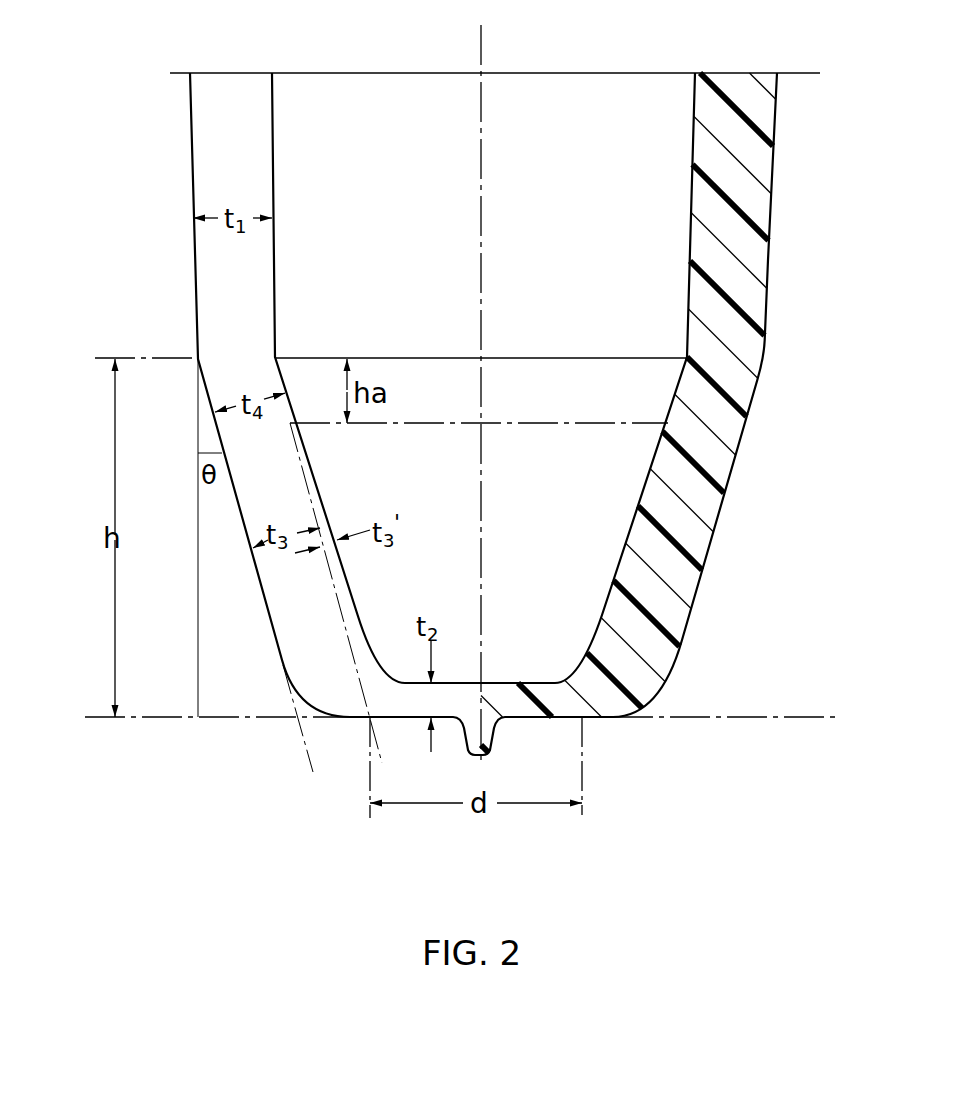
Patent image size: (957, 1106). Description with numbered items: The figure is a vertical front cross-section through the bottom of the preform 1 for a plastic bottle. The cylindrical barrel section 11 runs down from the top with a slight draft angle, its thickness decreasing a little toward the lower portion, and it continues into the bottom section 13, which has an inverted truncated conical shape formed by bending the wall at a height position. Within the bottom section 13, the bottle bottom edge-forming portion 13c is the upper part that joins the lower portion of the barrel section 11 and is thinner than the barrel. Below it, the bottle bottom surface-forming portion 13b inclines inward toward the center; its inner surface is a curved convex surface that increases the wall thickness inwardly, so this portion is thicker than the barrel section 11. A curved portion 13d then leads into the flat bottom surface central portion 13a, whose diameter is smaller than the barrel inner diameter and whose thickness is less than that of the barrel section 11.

The preform 1 is at (186, 188).
The barrel section 11 is at (743, 162).
The bottom section 13 is at (728, 478).
The bottom surface central portion 13a is at (524, 682).
The bottle bottom surface-forming portion 13b is at (692, 533).
The bottle bottom edge-forming portion 13c is at (725, 383).
The curved portion 13d is at (670, 678).